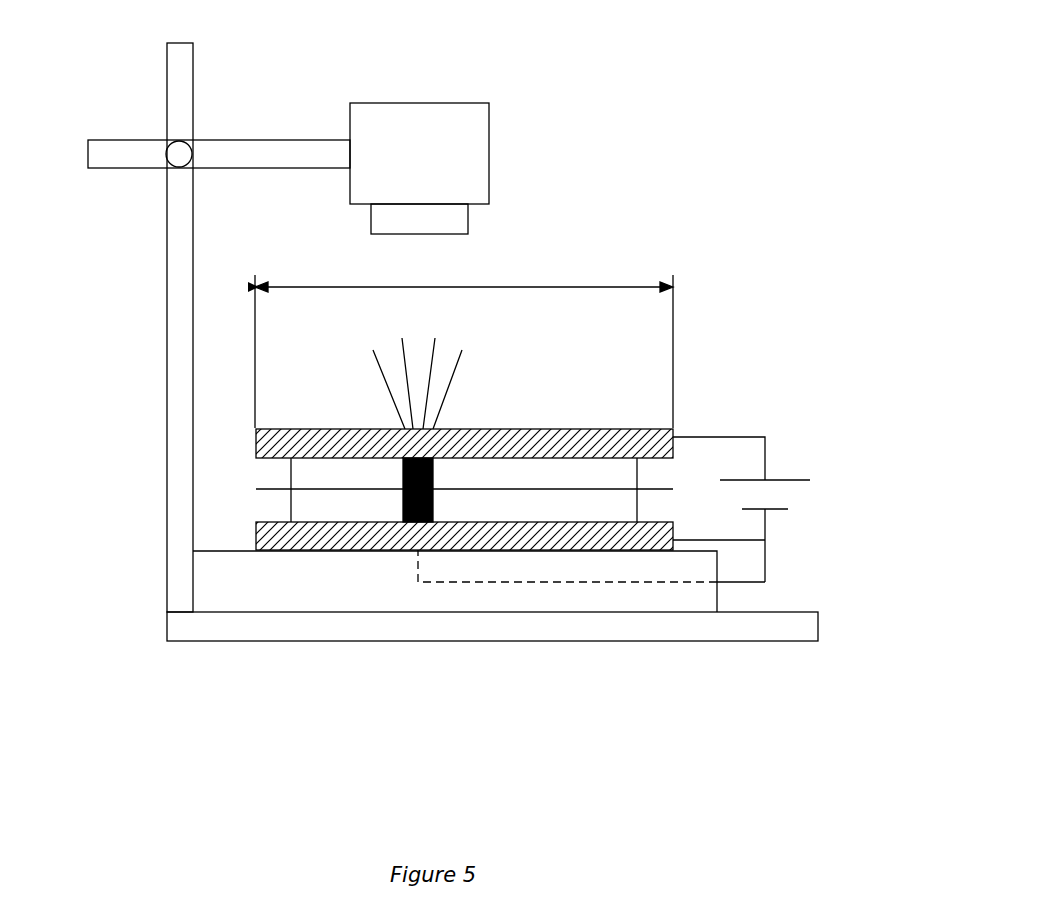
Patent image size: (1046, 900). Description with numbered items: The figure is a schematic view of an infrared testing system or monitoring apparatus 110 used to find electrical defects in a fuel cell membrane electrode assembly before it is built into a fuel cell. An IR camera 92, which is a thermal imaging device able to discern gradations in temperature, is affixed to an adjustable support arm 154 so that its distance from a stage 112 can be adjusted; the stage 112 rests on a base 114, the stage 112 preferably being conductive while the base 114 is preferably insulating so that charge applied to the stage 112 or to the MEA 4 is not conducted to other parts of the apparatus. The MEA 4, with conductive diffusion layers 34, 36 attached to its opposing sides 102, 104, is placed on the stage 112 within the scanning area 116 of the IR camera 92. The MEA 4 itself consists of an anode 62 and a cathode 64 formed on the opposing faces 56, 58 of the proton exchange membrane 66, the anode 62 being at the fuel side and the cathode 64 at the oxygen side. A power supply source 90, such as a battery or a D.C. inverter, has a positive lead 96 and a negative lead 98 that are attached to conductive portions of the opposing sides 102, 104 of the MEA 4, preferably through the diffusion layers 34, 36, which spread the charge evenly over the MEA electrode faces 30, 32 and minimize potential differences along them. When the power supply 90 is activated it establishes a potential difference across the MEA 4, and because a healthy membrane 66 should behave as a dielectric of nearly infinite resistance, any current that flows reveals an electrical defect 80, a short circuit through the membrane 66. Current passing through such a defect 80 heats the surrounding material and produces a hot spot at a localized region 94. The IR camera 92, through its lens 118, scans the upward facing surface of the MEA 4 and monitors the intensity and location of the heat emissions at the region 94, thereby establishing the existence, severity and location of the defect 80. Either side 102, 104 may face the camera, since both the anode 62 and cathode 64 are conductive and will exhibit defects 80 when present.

The adjustable support arm 154 is at (228, 142).
The IR camera 92 is at (493, 135).
The lens 118 is at (453, 223).
The monitoring apparatus 110 is at (603, 135).
The scanning area 116 is at (515, 287).
The localized region 94 is at (420, 368).
The MEA electrode face 30 is at (515, 429).
The MEA electrode face 32 is at (585, 551).
The electrical defect 80 is at (400, 505).
The PEM membrane face 56 is at (297, 475).
The diffusion layer 34 is at (675, 428).
The proton exchange membrane 66 is at (257, 490).
The anode 62 is at (320, 468).
The PEM membrane face 58 is at (293, 505).
The cathode 64 is at (327, 505).
The MEA 4 is at (599, 482).
The positive lead 96 is at (748, 436).
The power supply source 90 is at (787, 478).
The side of the MEA 102 is at (625, 476).
The side of the MEA 104 is at (625, 502).
The diffusion layer 36 is at (667, 540).
The negative lead 98 is at (752, 582).
The stage 112 is at (235, 590).
The base 114 is at (275, 623).